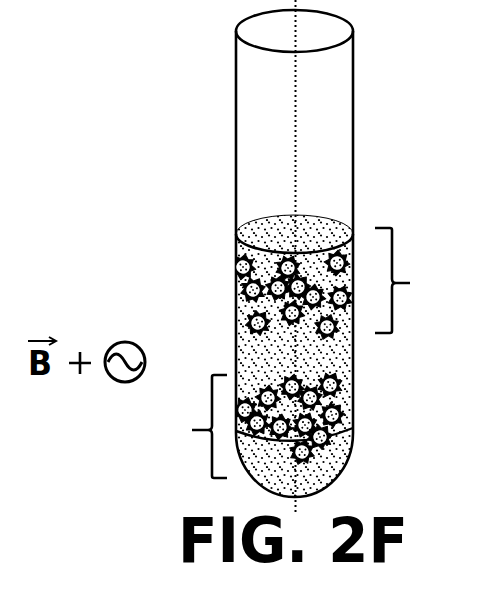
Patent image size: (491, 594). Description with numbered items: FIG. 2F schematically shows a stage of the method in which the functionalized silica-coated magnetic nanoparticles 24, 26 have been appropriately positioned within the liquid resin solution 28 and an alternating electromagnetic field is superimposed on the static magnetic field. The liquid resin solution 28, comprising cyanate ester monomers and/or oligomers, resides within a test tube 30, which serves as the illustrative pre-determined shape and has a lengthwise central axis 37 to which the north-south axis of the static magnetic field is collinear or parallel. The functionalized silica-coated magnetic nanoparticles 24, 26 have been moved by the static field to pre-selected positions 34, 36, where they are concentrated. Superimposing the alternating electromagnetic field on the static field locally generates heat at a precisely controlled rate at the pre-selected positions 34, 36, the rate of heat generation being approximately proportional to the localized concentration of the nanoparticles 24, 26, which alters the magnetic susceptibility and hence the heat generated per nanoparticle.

The silica-coated magnetic nanoparticles 24 is at (294, 357).
The surface functionality 26 is at (255, 322).
The liquid resin solution 28 is at (260, 358).
The test tube 30 is at (353, 155).
The pre-selected position 34 is at (186, 426).
The pre-selected position 36 is at (413, 280).
The lengthwise central axis 37 is at (296, 87).